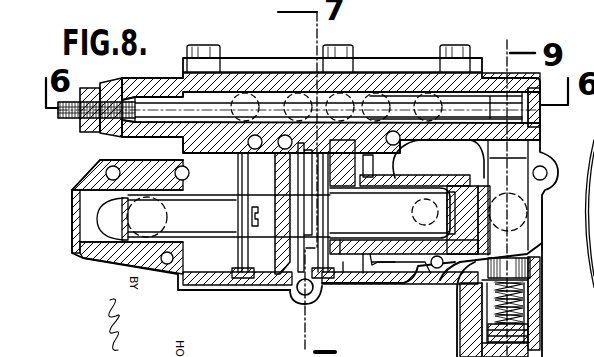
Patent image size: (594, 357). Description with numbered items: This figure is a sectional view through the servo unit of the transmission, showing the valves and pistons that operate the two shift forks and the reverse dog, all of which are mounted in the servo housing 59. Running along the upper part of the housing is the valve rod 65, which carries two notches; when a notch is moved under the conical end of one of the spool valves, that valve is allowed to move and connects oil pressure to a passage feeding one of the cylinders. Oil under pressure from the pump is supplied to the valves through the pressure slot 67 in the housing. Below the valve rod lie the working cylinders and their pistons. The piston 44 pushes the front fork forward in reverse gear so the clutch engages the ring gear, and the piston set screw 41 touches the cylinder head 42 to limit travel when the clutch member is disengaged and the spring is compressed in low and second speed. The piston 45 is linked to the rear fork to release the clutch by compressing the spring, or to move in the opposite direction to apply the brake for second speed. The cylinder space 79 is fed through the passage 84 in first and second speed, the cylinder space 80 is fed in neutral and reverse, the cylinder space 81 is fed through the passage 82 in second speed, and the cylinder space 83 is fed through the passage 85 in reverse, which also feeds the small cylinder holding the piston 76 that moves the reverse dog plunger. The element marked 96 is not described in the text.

The piston set screw 41 is at (243, 282).
The cylinder head 42 is at (268, 205).
The piston 44 is at (228, 262).
The piston 45 is at (330, 300).
The servo housing 59 is at (415, 270).
The rod 65 is at (252, 100).
The pressure slot 67 is at (457, 72).
The piston 76 is at (563, 271).
The cylinder space 79 is at (197, 278).
The cylinder space 80 is at (343, 262).
The cylinder space 81 is at (299, 262).
The passage 82 is at (366, 100).
The cylinder space 83 is at (262, 290).
The passage 84 is at (178, 165).
The passage 85 is at (383, 265).
The spring 96 is at (476, 318).